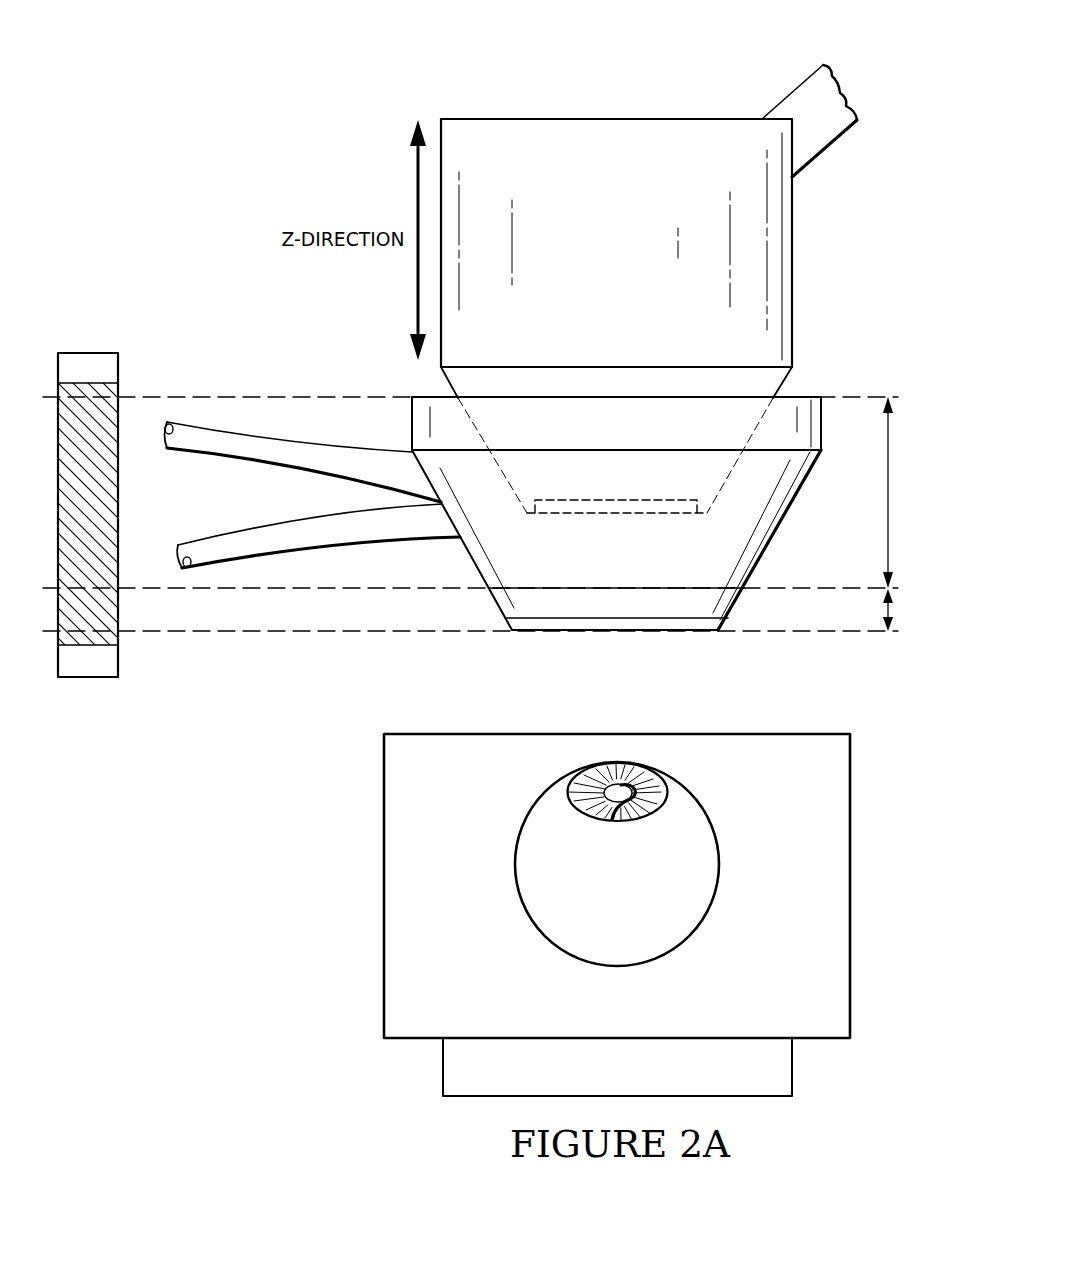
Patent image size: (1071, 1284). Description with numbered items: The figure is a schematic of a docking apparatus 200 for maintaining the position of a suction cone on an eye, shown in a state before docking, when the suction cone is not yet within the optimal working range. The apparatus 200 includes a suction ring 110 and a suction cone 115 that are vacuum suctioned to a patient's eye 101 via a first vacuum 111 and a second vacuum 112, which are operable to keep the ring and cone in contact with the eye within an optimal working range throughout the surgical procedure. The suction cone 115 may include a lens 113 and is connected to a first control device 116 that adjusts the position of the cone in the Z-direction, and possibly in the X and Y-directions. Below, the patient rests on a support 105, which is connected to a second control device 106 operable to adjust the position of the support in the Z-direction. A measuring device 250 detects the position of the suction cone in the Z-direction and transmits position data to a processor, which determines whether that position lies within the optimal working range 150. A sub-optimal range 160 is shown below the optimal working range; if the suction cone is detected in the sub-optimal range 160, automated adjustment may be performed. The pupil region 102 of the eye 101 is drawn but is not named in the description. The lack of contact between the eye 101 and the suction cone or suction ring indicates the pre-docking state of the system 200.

The docking apparatus 200 is at (256, 65).
The suction cone 115 is at (617, 119).
The first control device 116 is at (793, 92).
The suction ring 110 is at (822, 422).
The lens 113 is at (610, 514).
The first vacuum 111 is at (211, 422).
The second vacuum 112 is at (192, 568).
The measuring device 250 is at (86, 353).
The optimal working range 150 is at (888, 490).
The sub-optimal range 160 is at (888, 611).
The support 105 is at (852, 883).
The second control device 106 is at (792, 1065).
The patient's eye 101 is at (516, 858).
The nozzle opening 102 is at (611, 818).